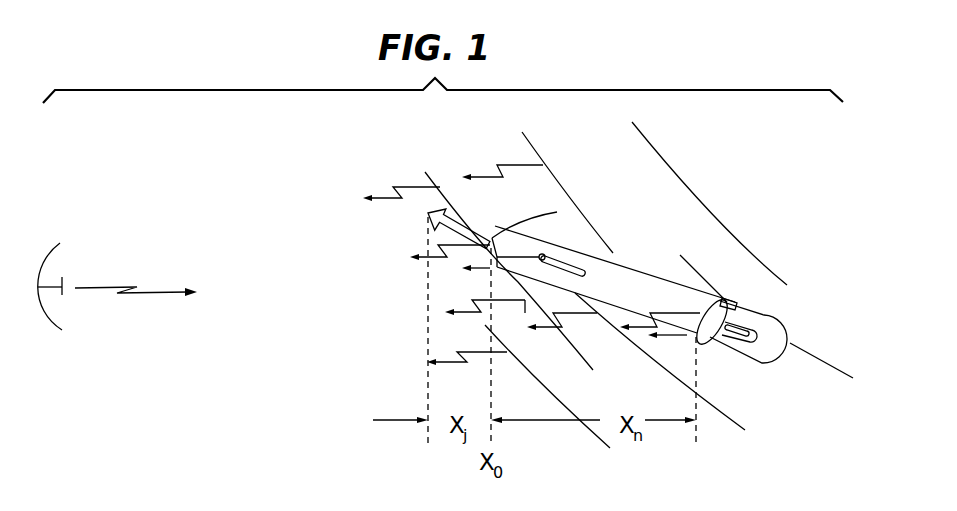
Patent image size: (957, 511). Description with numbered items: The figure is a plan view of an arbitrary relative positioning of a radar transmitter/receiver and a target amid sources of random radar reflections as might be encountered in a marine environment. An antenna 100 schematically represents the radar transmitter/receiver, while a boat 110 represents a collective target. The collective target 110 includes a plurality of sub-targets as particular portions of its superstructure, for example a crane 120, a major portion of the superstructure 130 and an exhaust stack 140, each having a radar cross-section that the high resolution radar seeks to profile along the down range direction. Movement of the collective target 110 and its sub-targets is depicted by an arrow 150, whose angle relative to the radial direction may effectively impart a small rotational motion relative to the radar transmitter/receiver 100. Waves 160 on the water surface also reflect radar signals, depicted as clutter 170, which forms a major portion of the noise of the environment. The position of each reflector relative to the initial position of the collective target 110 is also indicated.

The antenna 100 is at (60, 243).
The boat 110 is at (665, 279).
The crane 120 is at (545, 254).
The superstructure 130 is at (740, 302).
The exhaust stack 140 is at (780, 318).
The arrow 150 is at (489, 235).
The waves 160 is at (684, 190).
The clutter 170 is at (497, 165).